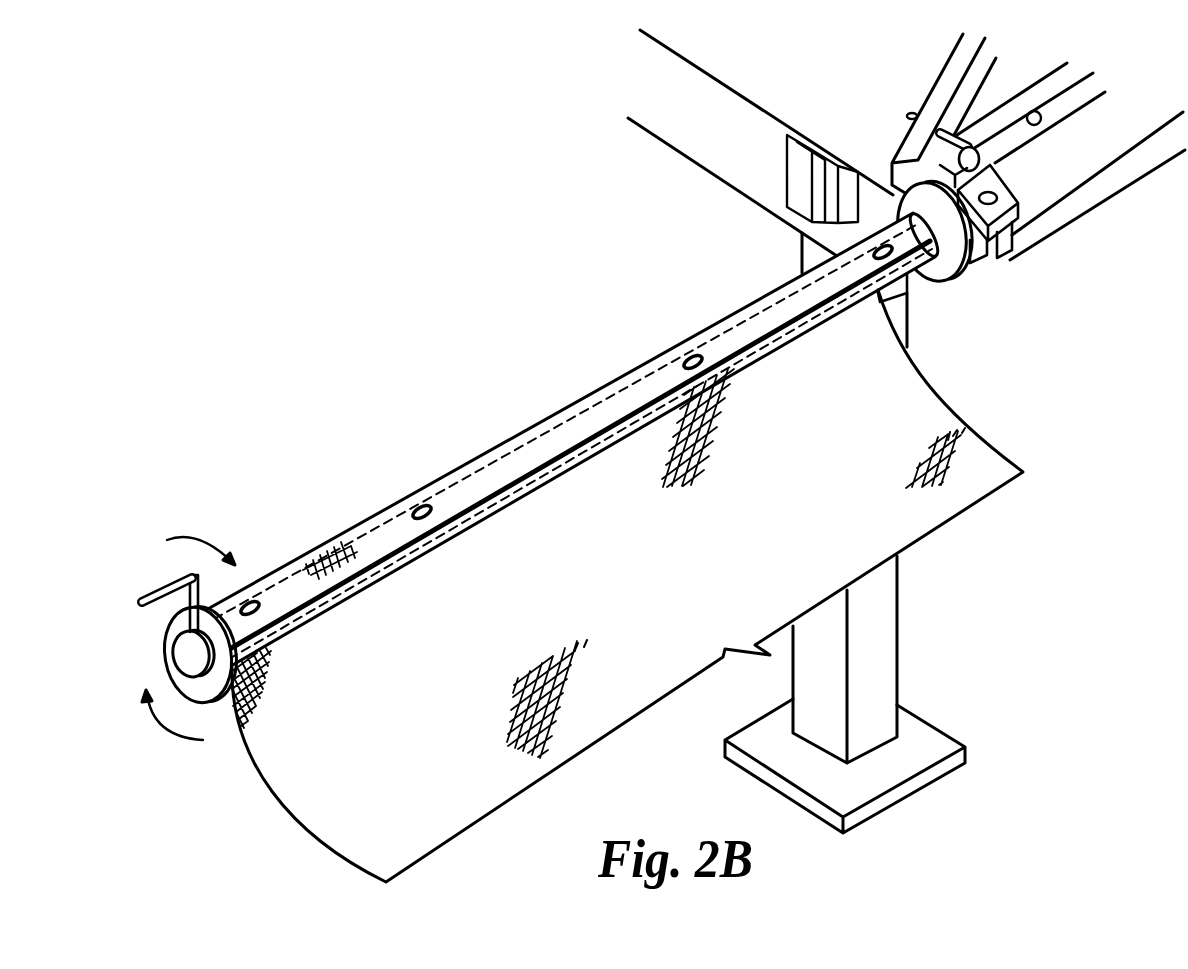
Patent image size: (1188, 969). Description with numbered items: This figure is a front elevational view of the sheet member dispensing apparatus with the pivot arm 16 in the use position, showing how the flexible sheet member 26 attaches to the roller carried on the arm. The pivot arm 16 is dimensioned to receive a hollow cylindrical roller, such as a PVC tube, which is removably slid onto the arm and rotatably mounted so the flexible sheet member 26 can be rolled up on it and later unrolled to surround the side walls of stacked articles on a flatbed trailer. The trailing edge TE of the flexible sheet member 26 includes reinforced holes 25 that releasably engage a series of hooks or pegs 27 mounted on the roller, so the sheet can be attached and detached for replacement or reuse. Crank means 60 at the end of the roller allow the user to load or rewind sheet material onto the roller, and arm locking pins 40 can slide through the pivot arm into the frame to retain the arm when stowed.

The pivot arm 16 is at (402, 558).
The reinforced holes 25 is at (420, 503).
The hooks or pegs 27 is at (692, 355).
The flexible sheet member 26 is at (689, 574).
The arm locking pins 40 is at (940, 125).
The crank means 60 is at (214, 716).
The trailing edge TE is at (558, 450).